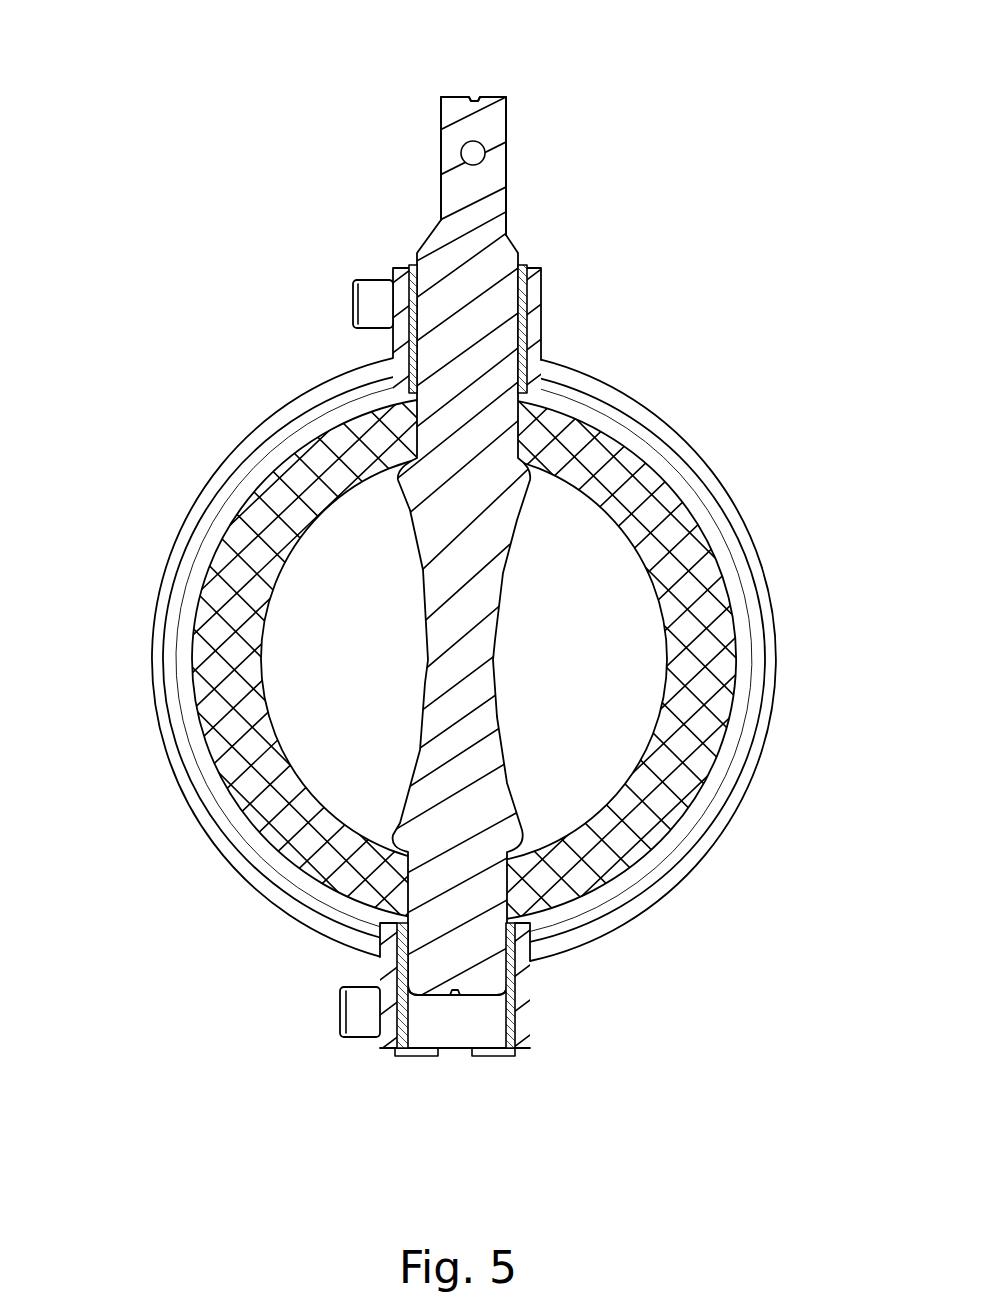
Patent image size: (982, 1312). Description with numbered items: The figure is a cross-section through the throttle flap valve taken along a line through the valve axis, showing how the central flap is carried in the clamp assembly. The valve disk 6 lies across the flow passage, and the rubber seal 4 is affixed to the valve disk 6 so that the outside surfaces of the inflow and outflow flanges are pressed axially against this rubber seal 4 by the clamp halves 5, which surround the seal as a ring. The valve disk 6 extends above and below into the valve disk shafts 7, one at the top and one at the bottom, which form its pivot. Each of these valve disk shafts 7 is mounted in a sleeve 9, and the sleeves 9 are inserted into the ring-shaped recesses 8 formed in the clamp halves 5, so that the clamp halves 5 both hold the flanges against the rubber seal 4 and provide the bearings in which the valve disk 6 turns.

The rubber seal 4 is at (240, 543).
The clamp halves 5 is at (185, 680).
The valve disk 6 is at (460, 767).
The valve disk shafts 7 is at (450, 253).
The ring-shaped recesses 8 is at (403, 310).
The sleeves 9 is at (413, 267).